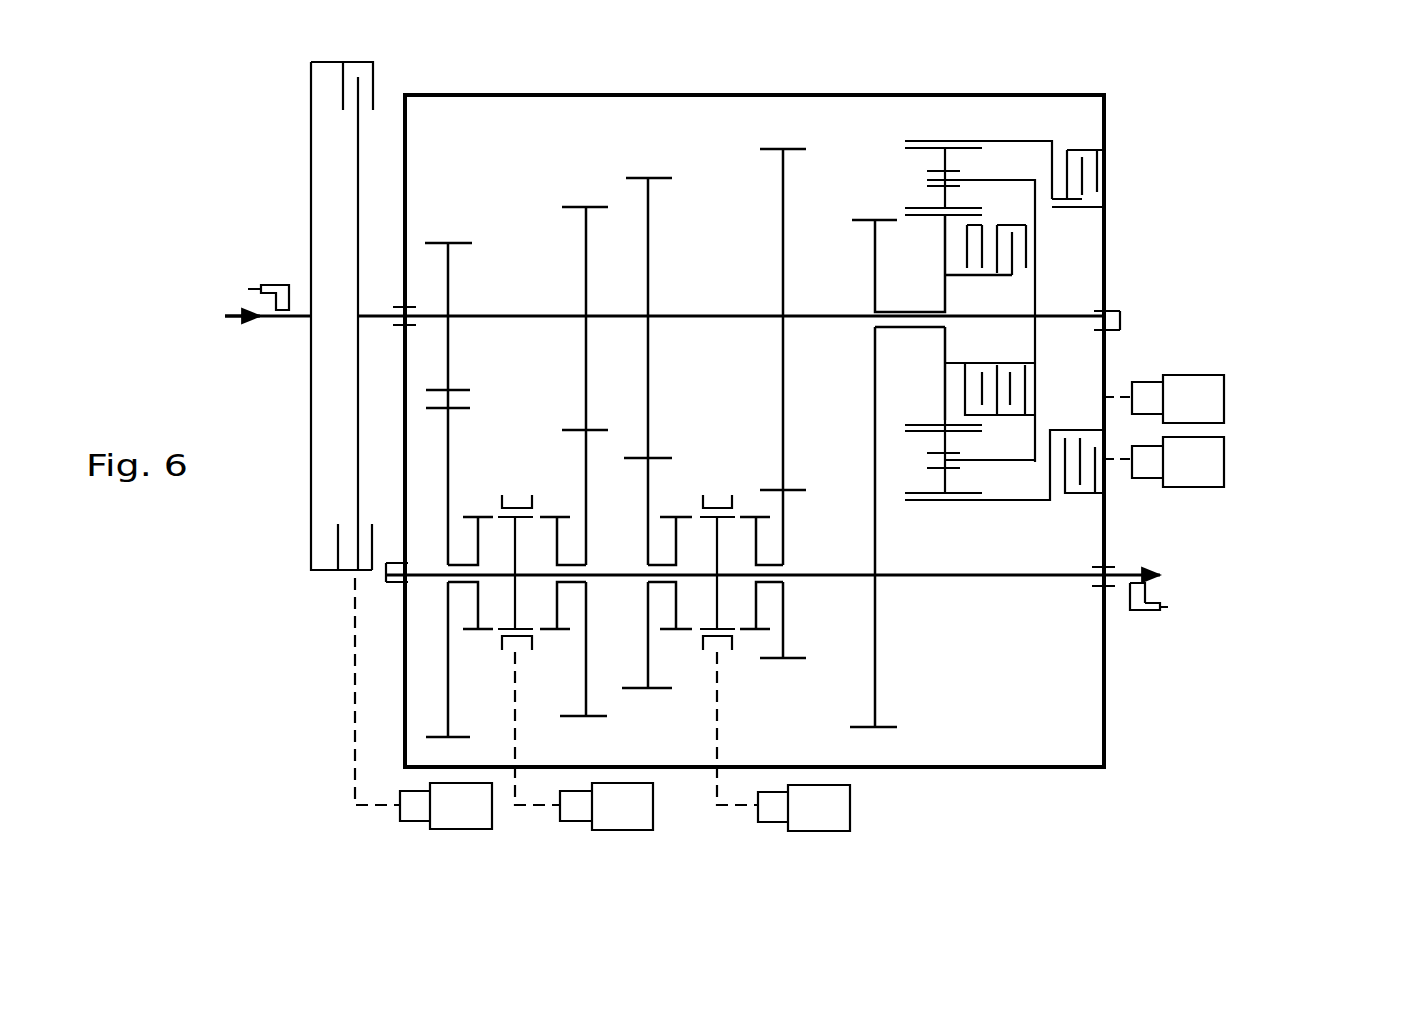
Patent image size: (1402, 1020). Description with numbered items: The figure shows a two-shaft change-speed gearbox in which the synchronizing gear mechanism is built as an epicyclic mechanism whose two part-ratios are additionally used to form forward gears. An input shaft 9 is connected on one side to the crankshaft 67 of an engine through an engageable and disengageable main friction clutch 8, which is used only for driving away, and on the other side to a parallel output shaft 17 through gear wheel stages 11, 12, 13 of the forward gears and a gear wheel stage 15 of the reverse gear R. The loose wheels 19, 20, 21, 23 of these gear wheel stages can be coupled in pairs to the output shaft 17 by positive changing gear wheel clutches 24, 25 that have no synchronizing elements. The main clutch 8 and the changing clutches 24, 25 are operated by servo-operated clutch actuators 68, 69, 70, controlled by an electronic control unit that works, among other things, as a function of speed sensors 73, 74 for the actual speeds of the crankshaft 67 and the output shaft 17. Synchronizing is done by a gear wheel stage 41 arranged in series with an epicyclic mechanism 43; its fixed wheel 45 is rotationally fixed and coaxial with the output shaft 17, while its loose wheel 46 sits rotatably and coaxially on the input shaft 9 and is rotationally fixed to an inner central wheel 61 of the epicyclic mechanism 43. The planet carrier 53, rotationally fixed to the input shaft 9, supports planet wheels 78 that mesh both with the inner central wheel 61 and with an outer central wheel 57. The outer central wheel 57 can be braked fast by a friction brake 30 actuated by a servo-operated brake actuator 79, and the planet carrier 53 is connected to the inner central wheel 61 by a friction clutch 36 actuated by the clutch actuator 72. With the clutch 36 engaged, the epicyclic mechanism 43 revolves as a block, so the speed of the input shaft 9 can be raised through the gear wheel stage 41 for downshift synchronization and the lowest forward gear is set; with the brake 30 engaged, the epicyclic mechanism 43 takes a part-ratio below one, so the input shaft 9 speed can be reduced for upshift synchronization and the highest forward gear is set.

The main friction clutch 8 is at (318, 575).
The input shaft 9 is at (690, 310).
The gear wheel stage 11 is at (566, 200).
The gear wheel stage 12 is at (668, 170).
The gear wheel stage 13 is at (800, 134).
The gear wheel stage of reverse gear 15 is at (467, 237).
The output shaft 17 is at (998, 580).
The loose wheel 19 is at (586, 663).
The loose wheel 20 is at (648, 655).
The loose wheel 21 is at (782, 621).
The loose wheel 23 is at (448, 678).
The changing gear wheel clutch 24 is at (513, 491).
The changing gear wheel clutch 25 is at (716, 491).
The friction brake 30 is at (1083, 133).
The friction clutch 36 is at (1022, 278).
The gear wheel stage 41 is at (876, 737).
The epicyclic mechanism 43 is at (906, 178).
The fixed wheel 45 is at (875, 645).
The loose wheel 46 is at (874, 278).
The planet carrier 53 is at (1012, 501).
The outer central wheel 57 is at (1007, 140).
The inner central wheel 61 is at (943, 392).
The crankshaft 67 is at (267, 324).
The clutch actuator 68 is at (470, 833).
The clutch actuator 69 is at (612, 836).
The clutch actuator 70 is at (797, 836).
The clutch actuator 72 is at (1228, 402).
The speed sensor 73 is at (267, 282).
The speed sensor 74 is at (1140, 614).
The planet wheels 78 is at (943, 445).
The brake actuator 79 is at (1228, 461).